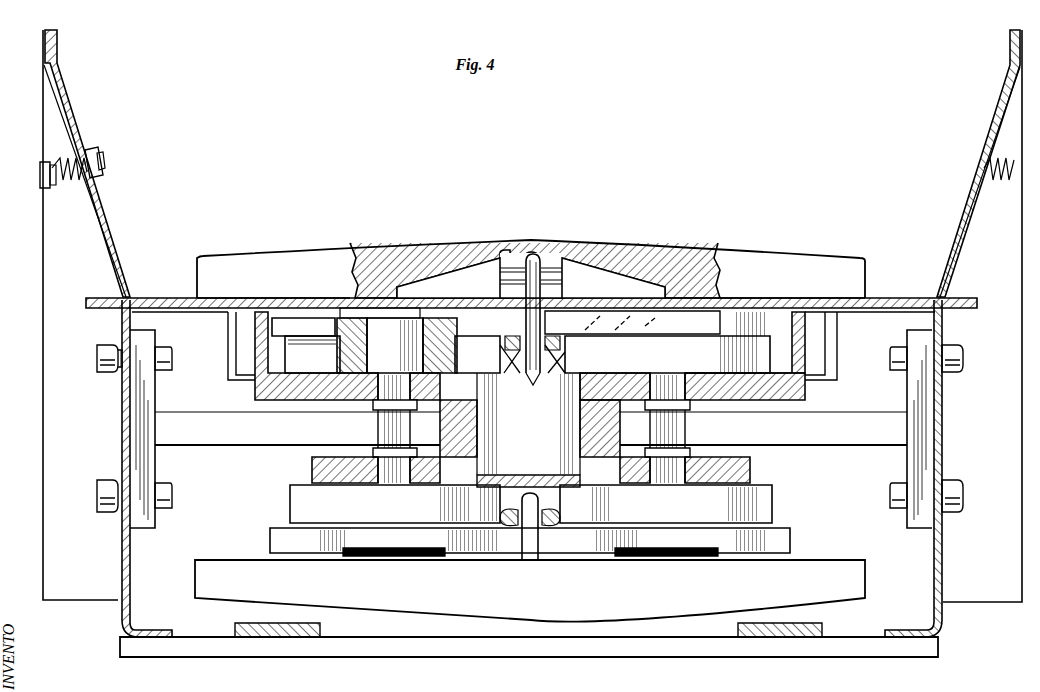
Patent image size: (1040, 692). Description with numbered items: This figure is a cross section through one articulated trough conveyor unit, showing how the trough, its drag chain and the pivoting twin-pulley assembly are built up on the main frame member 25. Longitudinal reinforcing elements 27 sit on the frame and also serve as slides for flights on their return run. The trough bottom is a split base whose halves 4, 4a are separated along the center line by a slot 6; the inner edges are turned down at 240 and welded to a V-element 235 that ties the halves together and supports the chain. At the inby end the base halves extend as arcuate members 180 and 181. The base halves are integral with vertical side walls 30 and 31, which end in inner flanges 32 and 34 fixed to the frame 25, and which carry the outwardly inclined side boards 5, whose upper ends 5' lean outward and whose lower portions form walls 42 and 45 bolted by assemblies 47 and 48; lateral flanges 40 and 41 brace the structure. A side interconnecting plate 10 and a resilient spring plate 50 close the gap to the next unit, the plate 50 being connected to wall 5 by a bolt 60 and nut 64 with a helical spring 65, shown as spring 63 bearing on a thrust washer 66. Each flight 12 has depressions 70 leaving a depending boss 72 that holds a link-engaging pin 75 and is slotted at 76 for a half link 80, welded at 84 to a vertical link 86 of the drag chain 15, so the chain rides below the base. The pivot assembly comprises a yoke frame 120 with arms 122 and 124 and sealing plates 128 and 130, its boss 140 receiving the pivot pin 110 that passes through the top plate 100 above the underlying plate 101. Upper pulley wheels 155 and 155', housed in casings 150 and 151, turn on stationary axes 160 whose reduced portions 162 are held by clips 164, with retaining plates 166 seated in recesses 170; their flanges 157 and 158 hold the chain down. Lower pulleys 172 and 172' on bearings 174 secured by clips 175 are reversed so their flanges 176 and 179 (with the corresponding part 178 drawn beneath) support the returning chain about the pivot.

The base half 4 is at (897, 300).
The base half 4a is at (160, 297).
The side wall 5 is at (85, 181).
The side plate upper end 5' is at (26, 56).
The slot 6 is at (490, 343).
The side interconnecting plate 10 is at (82, 110).
The flight 12 is at (788, 287).
The drag chain 15 is at (540, 548).
The main frame member 25 is at (228, 650).
The longitudinal reinforcing element 27 is at (320, 630).
The side wall 30 is at (124, 427).
The side wall 31 is at (938, 424).
The inner flange 32 is at (165, 630).
The inner flange 34 is at (900, 630).
The lateral flange 40 is at (80, 339).
The lateral flange 41 is at (992, 339).
The side wall 42 is at (118, 405).
The side wall 45 is at (944, 390).
The bolt assembly 47 is at (170, 490).
The bolt assembly 48 is at (95, 362).
The spring plate 50 is at (110, 210).
The bolt 60 is at (100, 152).
The spring 63 is at (80, 190).
The nut 64 is at (42, 182).
The helical spring 65 is at (996, 186).
The thrust washer 66 is at (48, 170).
The depression 70 is at (590, 262).
The depending boss 72 is at (556, 286).
The link-engaging pin 75 is at (500, 278).
The slot 76 is at (526, 248).
The half link 80 is at (535, 252).
The weld 84 is at (632, 322).
The vertical link 86 is at (532, 378).
The top plate 100 is at (310, 400).
The underlying plate 101 is at (740, 466).
The pivot pin 110 is at (534, 442).
The frame member 120 is at (822, 435).
The arm 122 is at (238, 428).
The arm 124 is at (838, 425).
The sealing plate 128 is at (148, 391).
The sealing plate 130 is at (910, 463).
The boss 140 is at (635, 405).
The pulley casing 150 is at (250, 350).
The pulley casing 151 is at (810, 330).
The upper pulley wheel 155 is at (312, 354).
The upper pulley wheel 155' is at (693, 337).
The upper flange 157 is at (306, 332).
The upper flange 158 is at (735, 318).
The stationary axis 160 is at (397, 345).
The reduced portion 162 is at (380, 400).
The clip 164 is at (413, 408).
The retaining plate 166 is at (355, 312).
The recess 170 is at (332, 296).
The lower pulley 172 is at (395, 504).
The lower pulley 172' is at (666, 504).
The pulley bearing 174 is at (672, 486).
The clip 175 is at (680, 450).
The flange 176 is at (290, 538).
The pad 178 is at (376, 556).
The flange 179 is at (652, 556).
The arcuate member 180 is at (100, 297).
The arcuate member 181 is at (965, 297).
The V-element 235 is at (572, 356).
The turned-down edge 240 is at (605, 324).